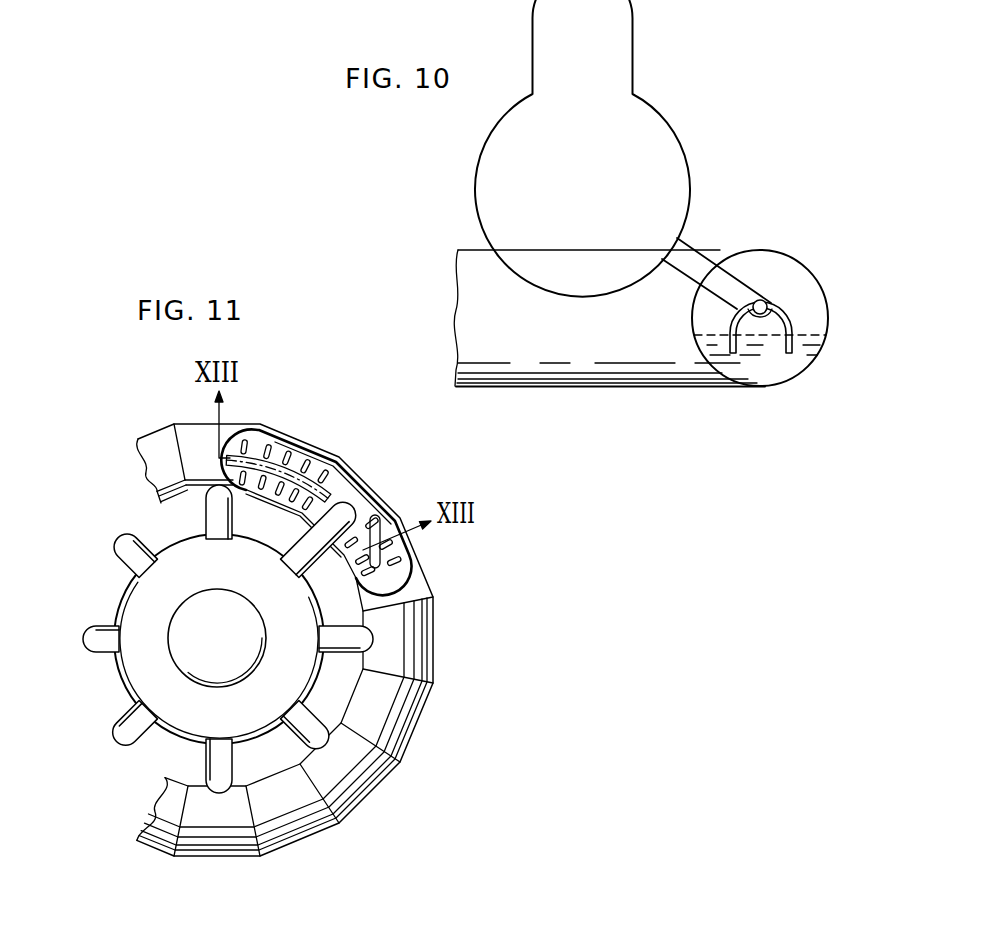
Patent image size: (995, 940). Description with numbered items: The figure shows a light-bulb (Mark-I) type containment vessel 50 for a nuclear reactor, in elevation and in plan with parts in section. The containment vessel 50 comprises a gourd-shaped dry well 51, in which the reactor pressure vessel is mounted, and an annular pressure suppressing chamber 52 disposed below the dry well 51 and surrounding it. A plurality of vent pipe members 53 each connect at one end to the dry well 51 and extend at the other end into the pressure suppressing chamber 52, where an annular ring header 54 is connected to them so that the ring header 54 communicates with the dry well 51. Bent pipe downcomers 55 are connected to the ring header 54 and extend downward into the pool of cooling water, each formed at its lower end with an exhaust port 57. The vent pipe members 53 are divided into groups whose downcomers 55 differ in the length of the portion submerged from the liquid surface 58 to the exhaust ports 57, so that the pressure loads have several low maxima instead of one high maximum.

In FIG. 10, the containment vessel 50 is at (735, 196).
In FIG. 11, the containment vessel 50 is at (340, 448).
In FIG. 10, the dry well 51 is at (634, 42).
In FIG. 11, the dry well 51 is at (133, 601).
In FIG. 10, the pressure suppressing chamber 52 is at (777, 250).
In FIG. 11, the pressure suppressing chamber 52 is at (434, 641).
In FIG. 10, the vent pipe members 53 is at (690, 276).
In FIG. 11, the vent pipe members 53 is at (147, 540).
In FIG. 10, the ring header 54 is at (763, 300).
In FIG. 11, the ring header 54 is at (280, 452).
In FIG. 10, the vent pipe downcomers 55 is at (733, 322).
In FIG. 11, the vent pipe downcomers 55 is at (343, 480).
In FIG. 10, the exhaust port 57 is at (793, 357).
In FIG. 10, the liquid surface 58 is at (810, 333).